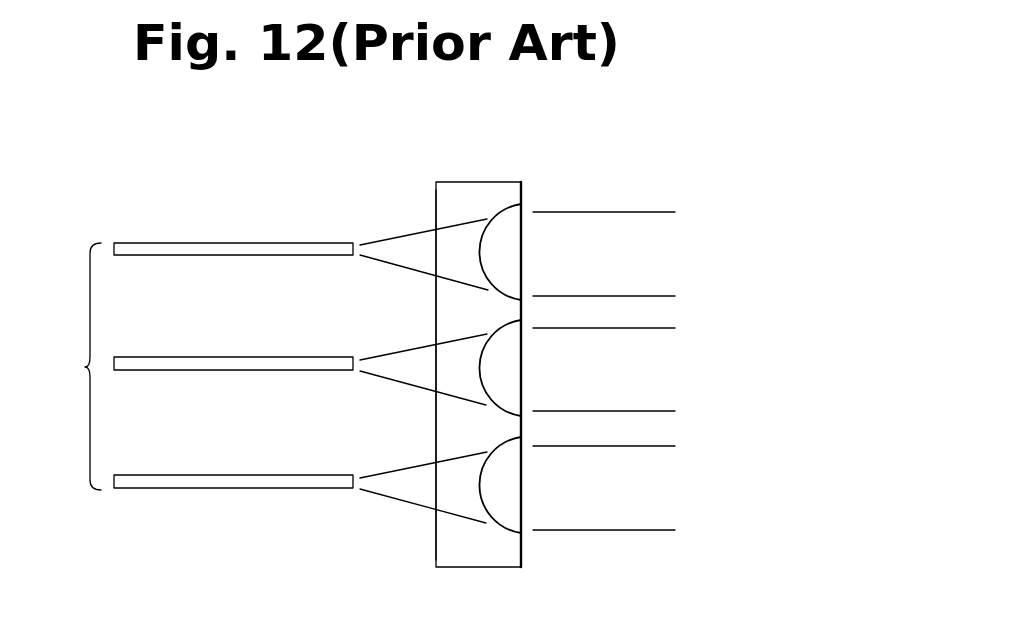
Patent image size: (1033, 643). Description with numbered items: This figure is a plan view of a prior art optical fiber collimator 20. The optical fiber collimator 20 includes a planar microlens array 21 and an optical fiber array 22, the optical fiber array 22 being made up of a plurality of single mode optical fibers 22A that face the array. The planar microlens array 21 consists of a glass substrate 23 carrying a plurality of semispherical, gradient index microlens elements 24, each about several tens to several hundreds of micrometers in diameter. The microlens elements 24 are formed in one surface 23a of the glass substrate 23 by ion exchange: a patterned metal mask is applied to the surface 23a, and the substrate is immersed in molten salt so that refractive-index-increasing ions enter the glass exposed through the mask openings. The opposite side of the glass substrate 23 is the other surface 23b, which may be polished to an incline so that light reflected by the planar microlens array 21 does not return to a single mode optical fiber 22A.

The optical fiber collimator 20 is at (126, 165).
The planar microlens array 21 is at (485, 175).
The optical fiber array 22 is at (87, 367).
The single mode optical fiber 22A is at (236, 242).
The glass substrate 23 is at (476, 568).
The surface 23a is at (522, 553).
The inclined surface 23b is at (434, 553).
The microlens element 24 is at (526, 252).